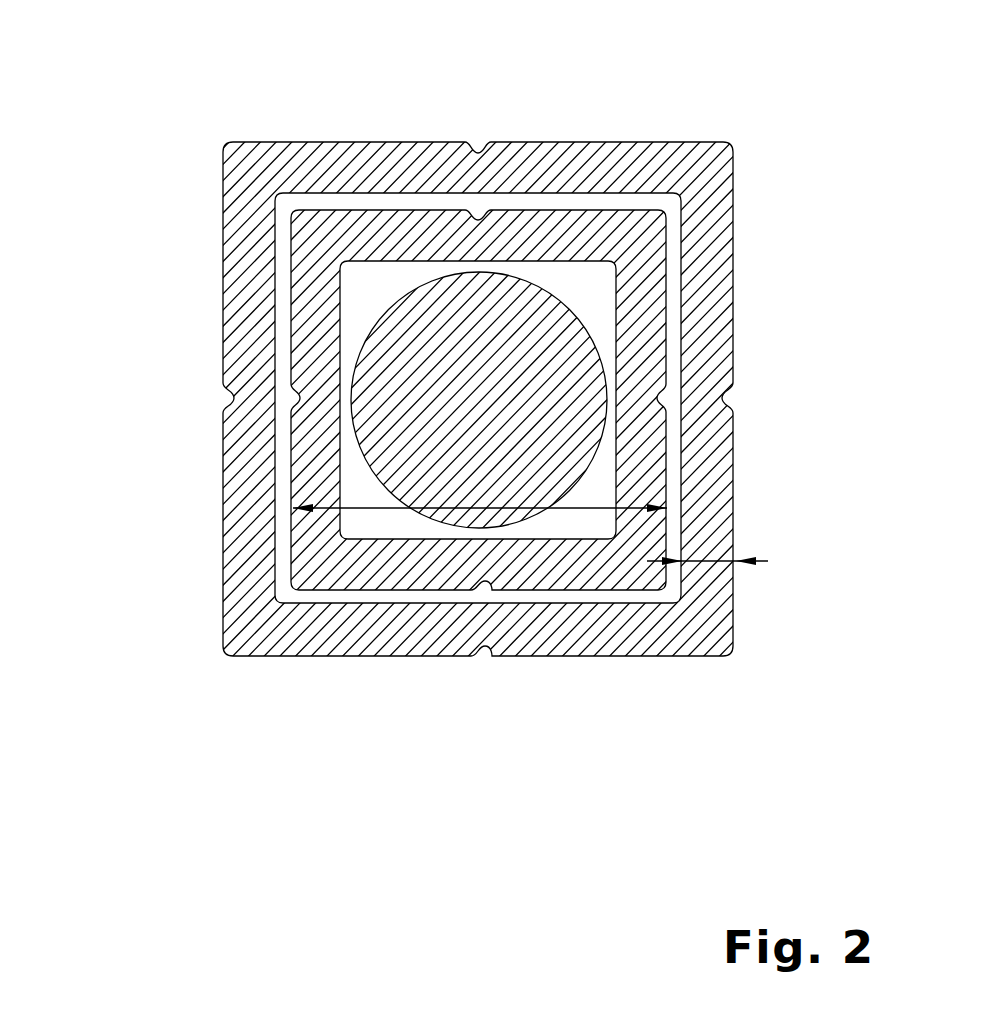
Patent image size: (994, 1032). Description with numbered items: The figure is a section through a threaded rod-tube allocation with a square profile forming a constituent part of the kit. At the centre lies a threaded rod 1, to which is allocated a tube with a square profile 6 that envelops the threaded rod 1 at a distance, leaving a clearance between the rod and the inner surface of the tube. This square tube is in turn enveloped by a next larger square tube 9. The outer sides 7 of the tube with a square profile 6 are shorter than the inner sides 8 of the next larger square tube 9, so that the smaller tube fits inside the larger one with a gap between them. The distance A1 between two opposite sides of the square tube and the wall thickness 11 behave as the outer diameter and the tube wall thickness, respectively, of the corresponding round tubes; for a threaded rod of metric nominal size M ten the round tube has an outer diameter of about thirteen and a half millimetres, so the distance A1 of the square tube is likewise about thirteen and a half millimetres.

The threaded rod 1 is at (373, 353).
The tube with a square profile 6 is at (643, 361).
The outer sides 7 is at (430, 210).
The inner sides 8 is at (274, 273).
The next larger square tube 9 is at (252, 633).
The wall thickness 11 is at (707, 561).
The distance of two opposite sides A1 is at (462, 508).